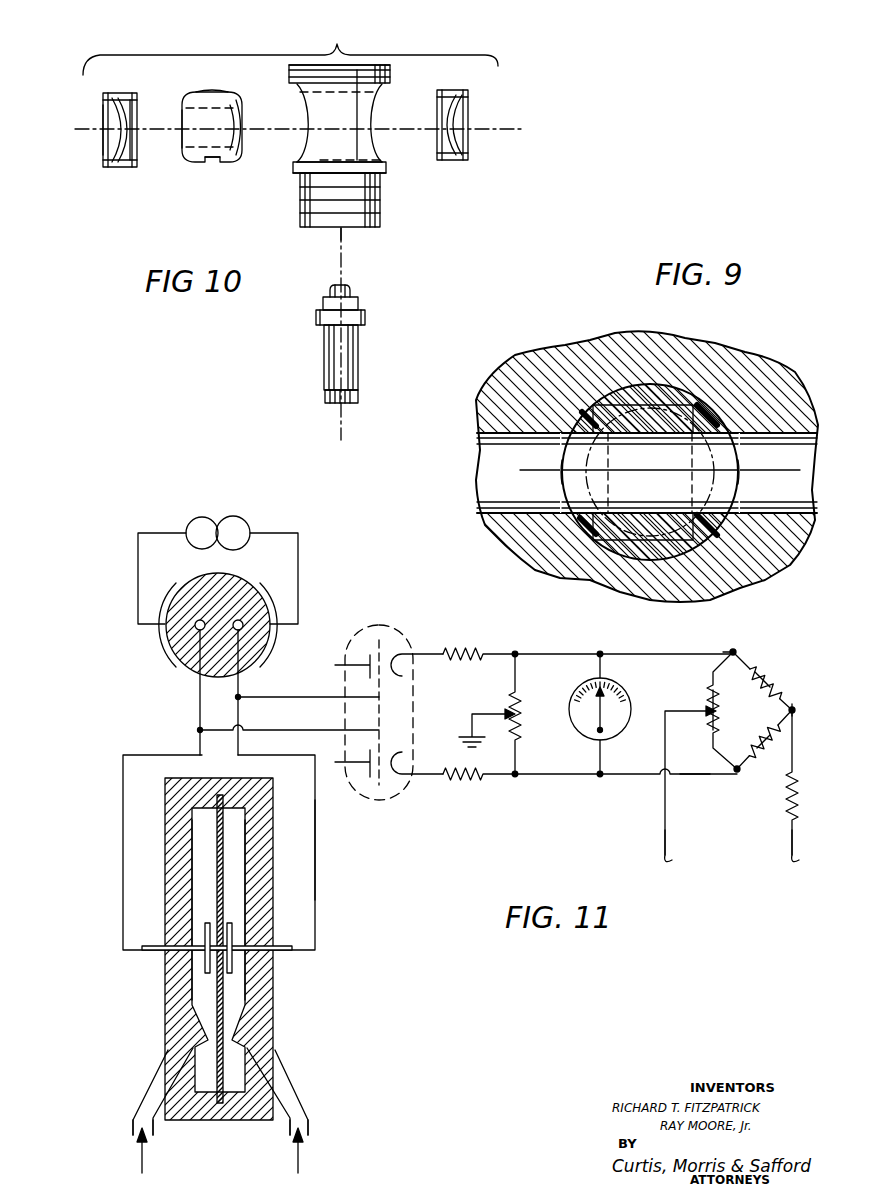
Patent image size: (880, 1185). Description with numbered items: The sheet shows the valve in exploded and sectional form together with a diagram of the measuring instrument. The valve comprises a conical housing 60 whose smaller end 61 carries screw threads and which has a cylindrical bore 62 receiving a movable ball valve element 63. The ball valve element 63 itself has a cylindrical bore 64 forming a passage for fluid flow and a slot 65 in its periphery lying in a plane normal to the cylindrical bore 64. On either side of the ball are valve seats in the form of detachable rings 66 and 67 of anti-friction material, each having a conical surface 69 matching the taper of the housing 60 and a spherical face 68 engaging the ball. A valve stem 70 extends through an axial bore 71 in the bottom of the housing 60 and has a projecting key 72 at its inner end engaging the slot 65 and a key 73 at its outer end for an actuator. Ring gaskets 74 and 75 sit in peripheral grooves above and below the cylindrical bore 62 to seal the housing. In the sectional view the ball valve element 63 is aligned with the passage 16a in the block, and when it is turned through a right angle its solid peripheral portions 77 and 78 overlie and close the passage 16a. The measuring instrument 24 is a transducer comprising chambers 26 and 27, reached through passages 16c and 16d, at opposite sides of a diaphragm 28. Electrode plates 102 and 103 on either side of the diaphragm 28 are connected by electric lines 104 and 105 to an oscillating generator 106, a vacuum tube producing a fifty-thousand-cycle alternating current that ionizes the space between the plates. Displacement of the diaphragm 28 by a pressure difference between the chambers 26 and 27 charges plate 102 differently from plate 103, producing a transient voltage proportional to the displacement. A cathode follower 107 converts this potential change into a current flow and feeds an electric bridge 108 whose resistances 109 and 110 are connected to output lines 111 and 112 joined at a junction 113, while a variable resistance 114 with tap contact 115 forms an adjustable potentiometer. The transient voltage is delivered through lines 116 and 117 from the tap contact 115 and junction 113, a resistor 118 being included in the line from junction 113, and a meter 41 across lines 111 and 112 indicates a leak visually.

In FIG. 9, the pipe passage 16a is at (478, 482).
In FIG. 11, the inlet leg 16c is at (133, 1118).
In FIG. 11, the inlet leg 16d is at (308, 1118).
In FIG. 11, the measuring instrument 24 is at (150, 1049).
In FIG. 11, the chamber 26 is at (200, 884).
In FIG. 11, the chamber 27 is at (235, 890).
In FIG. 11, the diaphragm 28 is at (223, 1025).
In FIG. 11, the meter 41 is at (582, 732).
In FIG. 10, the conical housing 60 is at (300, 163).
In FIG. 9, the conical housing 60 is at (645, 388).
In FIG. 10, the smaller end 61 is at (383, 215).
In FIG. 10, the cylindrical bore 62 is at (378, 100).
In FIG. 9, the cylindrical bore 62 is at (692, 548).
In FIG. 10, the ball valve 63 is at (198, 98).
In FIG. 9, the ball valve 63 is at (627, 418).
In FIG. 10, the cylindrical bore 64 is at (182, 148).
In FIG. 9, the cylindrical bore 64 is at (600, 500).
In FIG. 10, the slot 65 is at (215, 163).
In FIG. 10, the detachable ring 66 is at (120, 170).
In FIG. 9, the detachable ring 66 is at (572, 430).
In FIG. 10, the detachable ring 67 is at (457, 162).
In FIG. 9, the detachable ring 67 is at (722, 430).
In FIG. 10, the concave face 68 is at (128, 109).
In FIG. 10, the conical surface 69 is at (103, 110).
In FIG. 10, the valve stem 70 is at (360, 350).
In FIG. 10, the axial bore 71 is at (350, 233).
In FIG. 10, the projecting key 72 is at (350, 290).
In FIG. 10, the key 73 is at (360, 396).
In FIG. 10, the ring gasket 74 is at (292, 79).
In FIG. 10, the ring gasket 75 is at (383, 176).
In FIG. 10, the solid peripheral portion 77 is at (222, 95).
In FIG. 9, the solid peripheral portion 77 is at (673, 418).
In FIG. 9, the solid peripheral portion 78 is at (645, 540).
In FIG. 11, the electrode plate 102 is at (207, 968).
In FIG. 11, the electrode plate 103 is at (232, 968).
In FIG. 11, the electric line 104 is at (123, 842).
In FIG. 11, the electric line 105 is at (316, 862).
In FIG. 11, the oscillating generator 106 is at (168, 680).
In FIG. 11, the cathode follower 107 is at (397, 800).
In FIG. 11, the electric bridge 108 is at (771, 666).
In FIG. 11, the resistance 109 is at (776, 673).
In FIG. 11, the resistance 110 is at (760, 752).
In FIG. 11, the output line 111 is at (716, 650).
In FIG. 11, the output line 112 is at (697, 776).
In FIG. 11, the junction 113 is at (794, 712).
In FIG. 11, the variable resistance 114 is at (720, 709).
In FIG. 11, the tap contact 115 is at (672, 711).
In FIG. 11, the line 116 is at (665, 843).
In FIG. 11, the line 117 is at (792, 843).
In FIG. 11, the resistor 118 is at (797, 794).